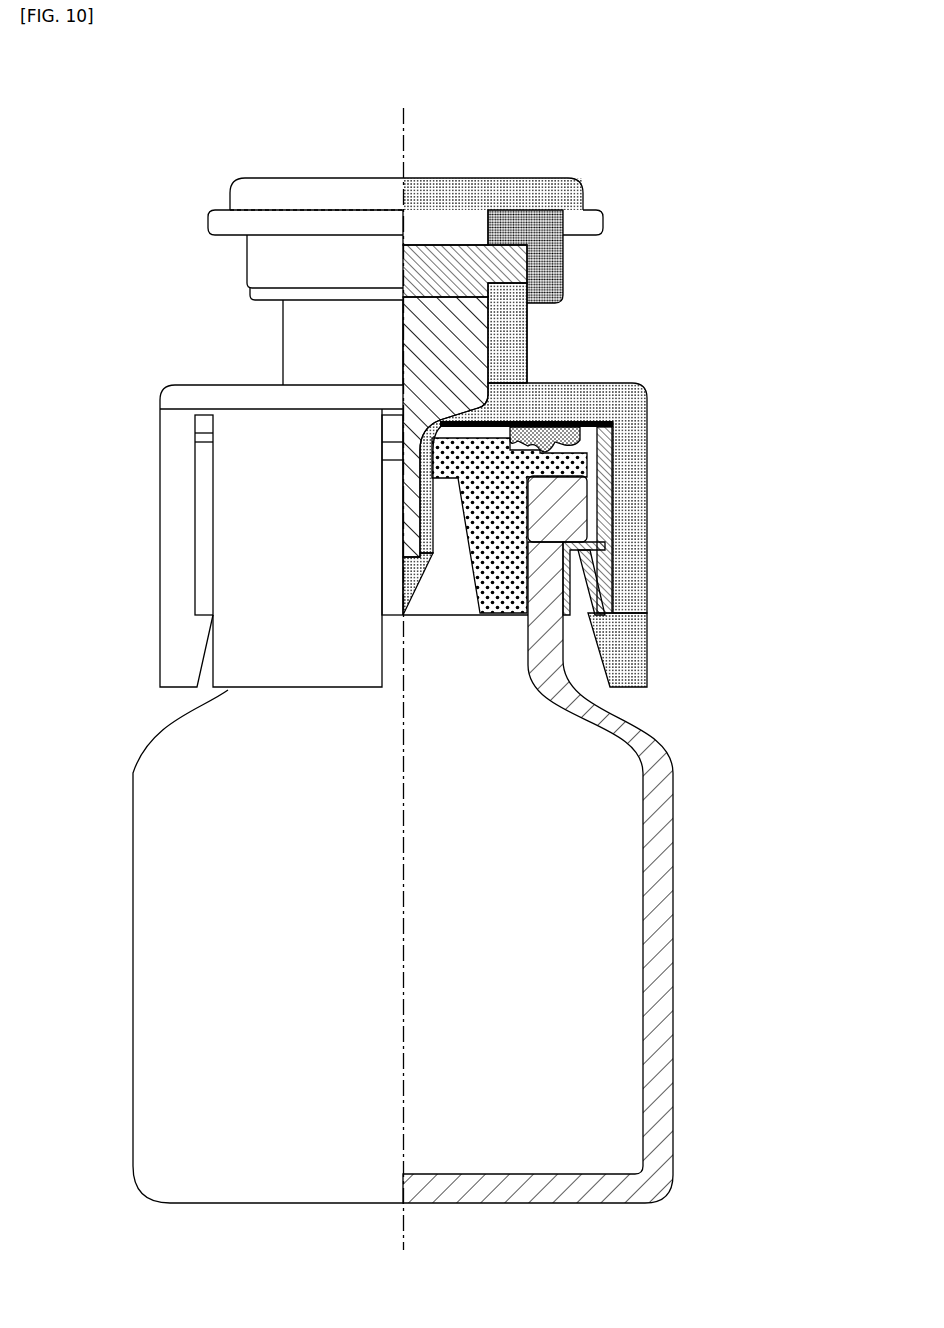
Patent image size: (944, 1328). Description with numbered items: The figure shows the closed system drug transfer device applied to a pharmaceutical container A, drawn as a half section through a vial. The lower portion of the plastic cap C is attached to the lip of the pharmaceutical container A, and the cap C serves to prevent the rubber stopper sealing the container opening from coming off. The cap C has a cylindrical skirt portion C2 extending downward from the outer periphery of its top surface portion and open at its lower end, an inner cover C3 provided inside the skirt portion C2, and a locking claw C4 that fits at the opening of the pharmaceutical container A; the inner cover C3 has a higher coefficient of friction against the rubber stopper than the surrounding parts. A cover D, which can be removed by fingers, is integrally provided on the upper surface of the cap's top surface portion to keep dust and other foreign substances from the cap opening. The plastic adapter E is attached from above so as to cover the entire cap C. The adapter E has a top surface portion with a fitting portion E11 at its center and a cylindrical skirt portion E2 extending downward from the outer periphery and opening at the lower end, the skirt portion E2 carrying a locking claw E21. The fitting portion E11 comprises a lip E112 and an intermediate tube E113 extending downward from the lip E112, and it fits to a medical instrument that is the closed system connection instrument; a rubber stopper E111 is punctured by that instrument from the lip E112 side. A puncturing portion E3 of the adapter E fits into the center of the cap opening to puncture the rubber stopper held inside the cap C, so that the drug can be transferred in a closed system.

The cover D is at (614, 198).
The fitting portion E11 is at (500, 383).
The rubber stopper E111 is at (565, 244).
The lip E112 is at (565, 263).
The intermediate tube E113 is at (535, 420).
The plastic adapter E is at (516, 495).
The skirt portion E2 is at (648, 460).
The locking claw E21 is at (628, 668).
The puncturing portion E3 is at (423, 555).
The plastic cap C is at (482, 500).
The skirt portion C2 is at (612, 499).
The inner cover C3 is at (490, 421).
The locking claw C4 is at (578, 560).
The pharmaceutical container A is at (701, 774).